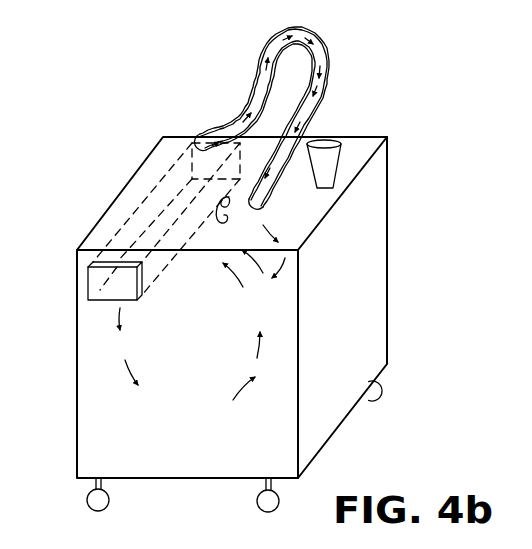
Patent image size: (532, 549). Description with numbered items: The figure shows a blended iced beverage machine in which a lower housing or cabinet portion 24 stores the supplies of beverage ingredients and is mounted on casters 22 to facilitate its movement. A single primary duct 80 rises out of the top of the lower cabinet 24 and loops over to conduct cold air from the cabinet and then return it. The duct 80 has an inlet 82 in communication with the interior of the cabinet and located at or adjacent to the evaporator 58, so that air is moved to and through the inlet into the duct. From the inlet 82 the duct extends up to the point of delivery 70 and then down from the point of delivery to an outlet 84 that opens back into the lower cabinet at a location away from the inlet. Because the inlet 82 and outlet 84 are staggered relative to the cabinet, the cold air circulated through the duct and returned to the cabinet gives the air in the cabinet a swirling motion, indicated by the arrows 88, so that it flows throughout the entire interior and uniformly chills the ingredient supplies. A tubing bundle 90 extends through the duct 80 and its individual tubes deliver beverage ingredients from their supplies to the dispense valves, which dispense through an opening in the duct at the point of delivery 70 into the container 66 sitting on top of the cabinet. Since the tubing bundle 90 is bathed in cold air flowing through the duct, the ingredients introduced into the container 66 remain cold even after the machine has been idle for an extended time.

The casters 22 is at (106, 505).
The lower housing or cabinet portion 24 is at (370, 319).
The evaporator 58 is at (113, 288).
The container 66 is at (328, 165).
The point of delivery 70 is at (328, 98).
The primary duct 80 is at (328, 50).
The inlet 82 is at (210, 138).
The outlet 84 is at (250, 205).
The arrows 88 is at (202, 417).
The tubing bundle 90 is at (298, 32).